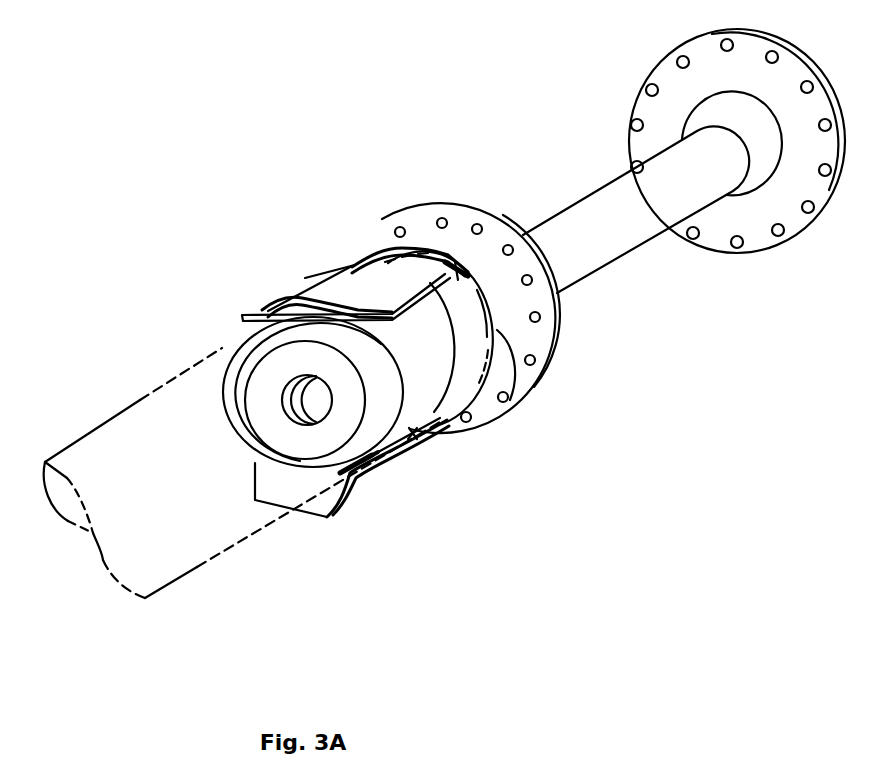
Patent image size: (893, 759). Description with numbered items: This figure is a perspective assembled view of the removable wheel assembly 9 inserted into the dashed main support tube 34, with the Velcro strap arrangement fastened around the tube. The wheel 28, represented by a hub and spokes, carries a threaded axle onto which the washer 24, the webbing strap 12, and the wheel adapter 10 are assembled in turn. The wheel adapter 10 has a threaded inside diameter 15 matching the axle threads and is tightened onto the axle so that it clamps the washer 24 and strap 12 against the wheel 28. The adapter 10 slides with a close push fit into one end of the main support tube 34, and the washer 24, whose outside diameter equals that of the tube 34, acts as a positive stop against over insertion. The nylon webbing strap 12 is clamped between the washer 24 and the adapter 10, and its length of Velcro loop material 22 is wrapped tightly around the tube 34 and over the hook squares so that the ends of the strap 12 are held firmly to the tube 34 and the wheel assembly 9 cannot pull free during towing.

The wheel assembly 9 is at (444, 326).
The wheel adapter 10 is at (270, 420).
The webbing strap 12 is at (275, 312).
The threaded inside diameter 15 is at (277, 393).
The Velcro loop material 22 is at (348, 288).
The washer 24 is at (510, 400).
The wheel 28 is at (557, 360).
The main support tube 34 is at (193, 567).